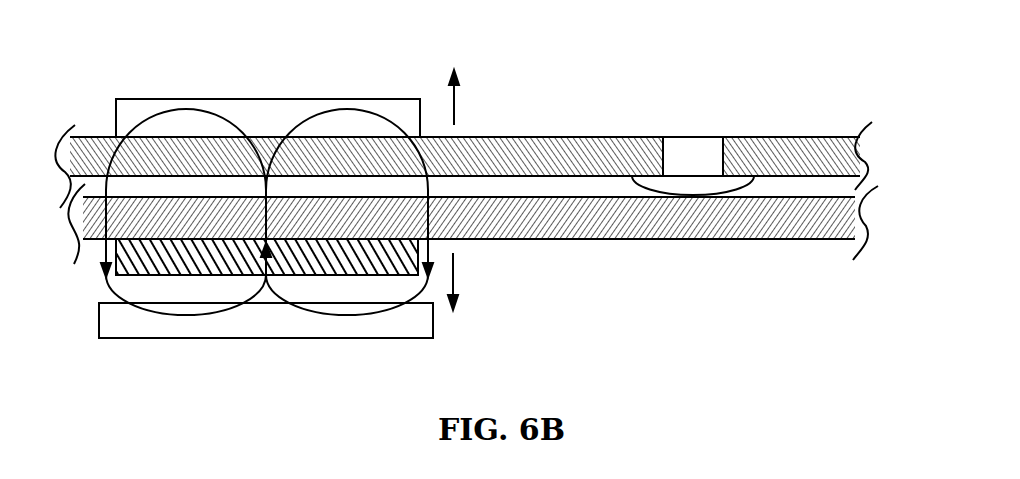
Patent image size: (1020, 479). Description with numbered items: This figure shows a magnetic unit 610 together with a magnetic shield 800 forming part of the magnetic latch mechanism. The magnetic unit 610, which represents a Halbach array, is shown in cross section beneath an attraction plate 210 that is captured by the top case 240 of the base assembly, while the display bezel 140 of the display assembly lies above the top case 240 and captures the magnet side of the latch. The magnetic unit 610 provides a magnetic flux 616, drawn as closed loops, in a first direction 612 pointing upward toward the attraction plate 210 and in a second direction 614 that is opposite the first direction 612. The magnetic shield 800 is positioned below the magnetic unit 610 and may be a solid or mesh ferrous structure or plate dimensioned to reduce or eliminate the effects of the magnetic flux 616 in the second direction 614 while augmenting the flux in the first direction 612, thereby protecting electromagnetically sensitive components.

The display bezel 140 is at (581, 151).
The top case 240 is at (592, 240).
The attraction plate 210 is at (118, 109).
The magnetic unit 610 is at (108, 278).
The magnetic shield 800 is at (152, 338).
The magnetic flux 616 is at (323, 114).
The first direction 612 is at (456, 110).
The second direction 614 is at (456, 281).